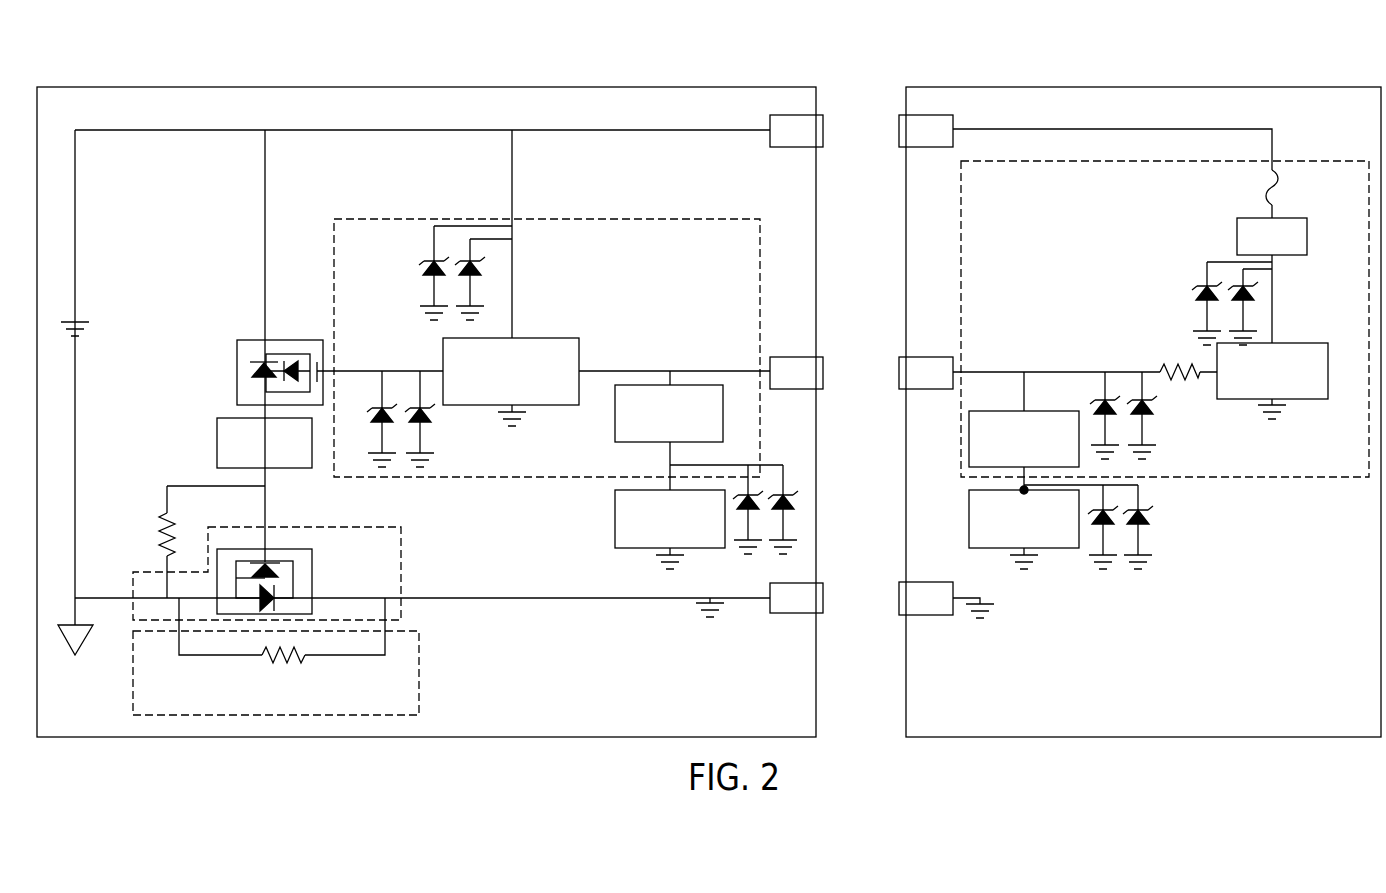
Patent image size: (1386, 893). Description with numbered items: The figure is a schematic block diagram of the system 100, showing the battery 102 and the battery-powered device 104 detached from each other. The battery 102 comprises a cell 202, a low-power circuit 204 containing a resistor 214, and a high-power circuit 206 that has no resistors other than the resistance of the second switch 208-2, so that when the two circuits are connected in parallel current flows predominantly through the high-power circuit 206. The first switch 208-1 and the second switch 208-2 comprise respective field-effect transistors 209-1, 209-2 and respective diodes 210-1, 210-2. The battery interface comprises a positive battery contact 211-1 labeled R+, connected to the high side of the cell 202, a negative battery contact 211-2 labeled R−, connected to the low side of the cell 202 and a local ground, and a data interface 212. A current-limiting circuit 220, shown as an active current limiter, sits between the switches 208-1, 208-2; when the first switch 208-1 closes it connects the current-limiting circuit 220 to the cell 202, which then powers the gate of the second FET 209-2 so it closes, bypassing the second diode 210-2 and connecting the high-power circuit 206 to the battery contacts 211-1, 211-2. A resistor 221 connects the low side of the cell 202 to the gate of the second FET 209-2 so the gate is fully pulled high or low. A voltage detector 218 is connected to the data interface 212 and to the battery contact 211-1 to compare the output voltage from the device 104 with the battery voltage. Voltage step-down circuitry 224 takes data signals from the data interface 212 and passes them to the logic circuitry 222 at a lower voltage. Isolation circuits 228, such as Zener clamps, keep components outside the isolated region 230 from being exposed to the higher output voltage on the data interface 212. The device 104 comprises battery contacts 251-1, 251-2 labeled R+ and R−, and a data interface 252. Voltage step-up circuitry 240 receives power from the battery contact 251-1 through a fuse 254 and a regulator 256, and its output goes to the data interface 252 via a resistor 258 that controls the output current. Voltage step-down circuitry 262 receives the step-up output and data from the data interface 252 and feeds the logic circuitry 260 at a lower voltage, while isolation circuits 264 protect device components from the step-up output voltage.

The sensor system 100 is at (118, 38).
The battery 102 is at (431, 87).
The battery-powered device 104 is at (1143, 87).
The cell 202 is at (83, 320).
The low-power circuit 204 is at (133, 691).
The high-power circuit 206 is at (402, 560).
The first switch 208-1 is at (247, 340).
The second switch 208-2 is at (286, 550).
The first FET 209-1 is at (303, 354).
The second FET 209-2 is at (236, 578).
The first diode 210-1 is at (252, 372).
The second diode 210-2 is at (283, 598).
The battery contact 211-1 is at (793, 115).
The battery contact 211-2 is at (773, 613).
The data interface 212 is at (797, 357).
The resistor 214 is at (270, 655).
The voltage detector 218 is at (550, 338).
The current-limiting circuit 220 is at (217, 442).
The resistor 221 is at (162, 525).
The logic circuitry 222 is at (615, 517).
The voltage step-down circuitry 224 is at (615, 425).
The isolation circuits 228 is at (413, 290).
The isolated region 230 is at (595, 219).
The voltage step-up circuitry 240 is at (1305, 343).
The battery contact 251-1 is at (925, 115).
The battery contact 251-2 is at (930, 613).
The data interface 252 is at (930, 357).
The fuse 254 is at (1260, 197).
The regulator 256 is at (1237, 237).
The resistor 258 is at (1160, 372).
The logic circuitry 260 is at (1055, 548).
The voltage step-down circuitry 262 is at (1050, 411).
The isolation circuits 264 is at (1330, 161).